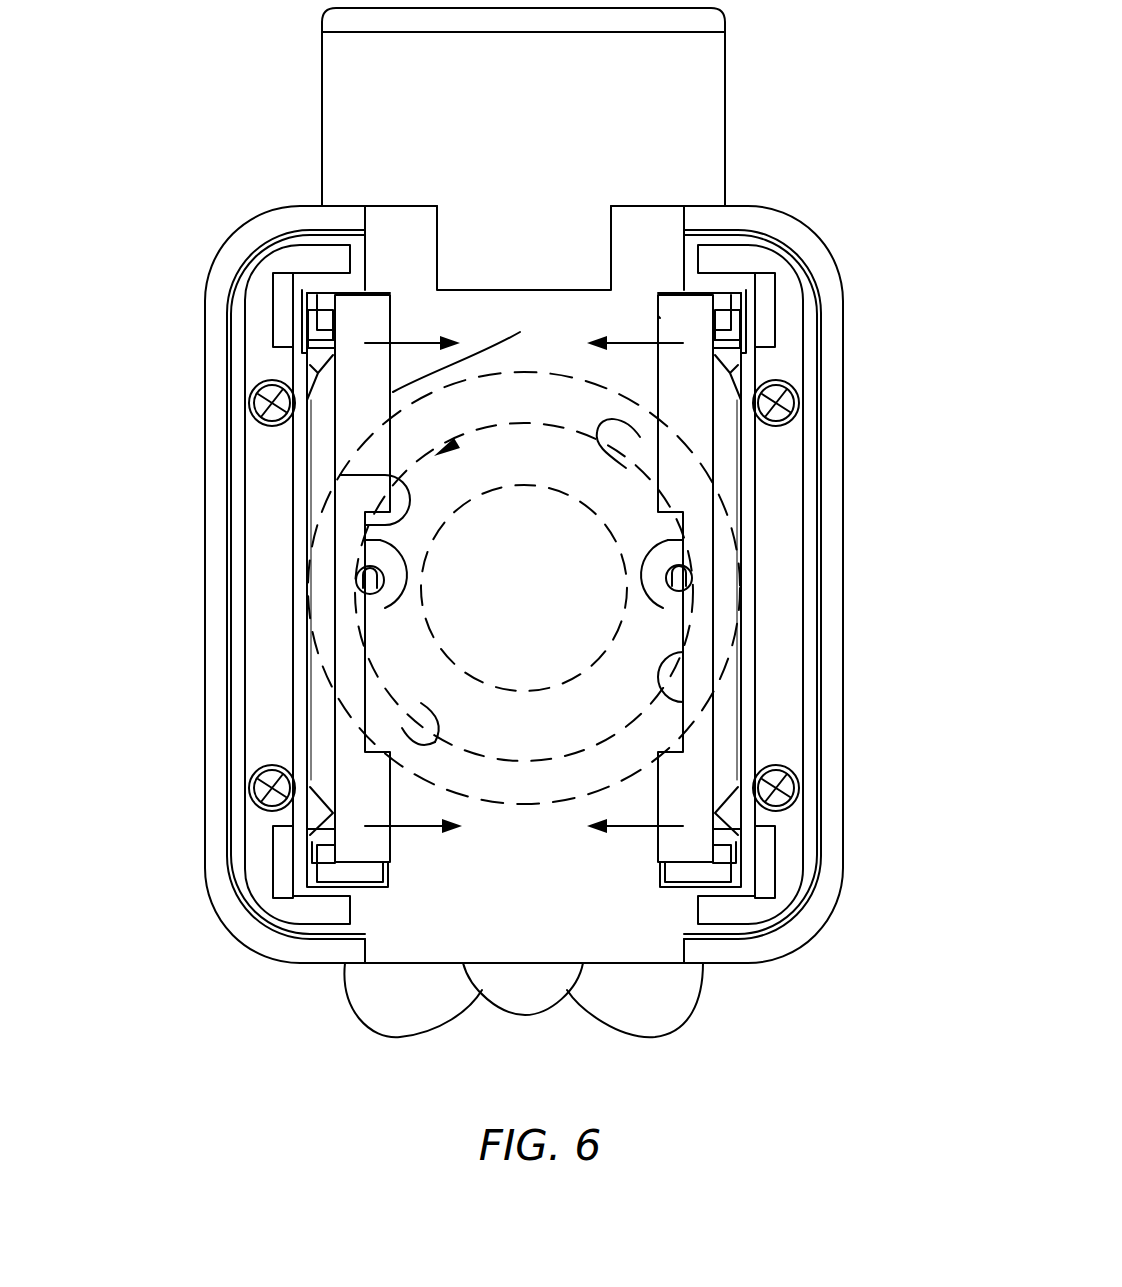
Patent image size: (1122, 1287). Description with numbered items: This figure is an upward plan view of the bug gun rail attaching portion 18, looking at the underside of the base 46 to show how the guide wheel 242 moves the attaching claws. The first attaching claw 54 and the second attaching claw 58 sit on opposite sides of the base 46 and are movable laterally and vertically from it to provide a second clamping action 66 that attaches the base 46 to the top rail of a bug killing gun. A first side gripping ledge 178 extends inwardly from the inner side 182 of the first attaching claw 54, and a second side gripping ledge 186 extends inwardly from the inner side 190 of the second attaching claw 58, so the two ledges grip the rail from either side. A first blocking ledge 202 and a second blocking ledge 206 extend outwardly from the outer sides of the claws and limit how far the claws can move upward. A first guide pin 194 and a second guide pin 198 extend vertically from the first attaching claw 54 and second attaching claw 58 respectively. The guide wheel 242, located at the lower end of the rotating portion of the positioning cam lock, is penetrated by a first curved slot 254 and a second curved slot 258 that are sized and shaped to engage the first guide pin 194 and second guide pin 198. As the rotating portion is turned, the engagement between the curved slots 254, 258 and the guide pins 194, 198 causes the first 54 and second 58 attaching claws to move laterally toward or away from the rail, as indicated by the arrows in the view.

The bug gun rail attaching portion 18 is at (810, 192).
The base 46 is at (828, 268).
The first attaching claw 54 is at (690, 360).
The second attaching claw 58 is at (357, 313).
The second clamping action 66 is at (408, 345).
The first side gripping ledge 178 is at (658, 316).
The inner side of the first attaching claw 182 is at (662, 690).
The second side gripping ledge 186 is at (527, 345).
The inner side of the second attaching claw 190 is at (385, 475).
The first guide pin 194 is at (677, 578).
The second guide pin 198 is at (372, 582).
The first blocking ledge 202 is at (723, 453).
The second blocking ledge 206 is at (325, 407).
The guide wheel 242 is at (547, 802).
The first curved slot 254 is at (623, 438).
The second curved slot 258 is at (433, 715).